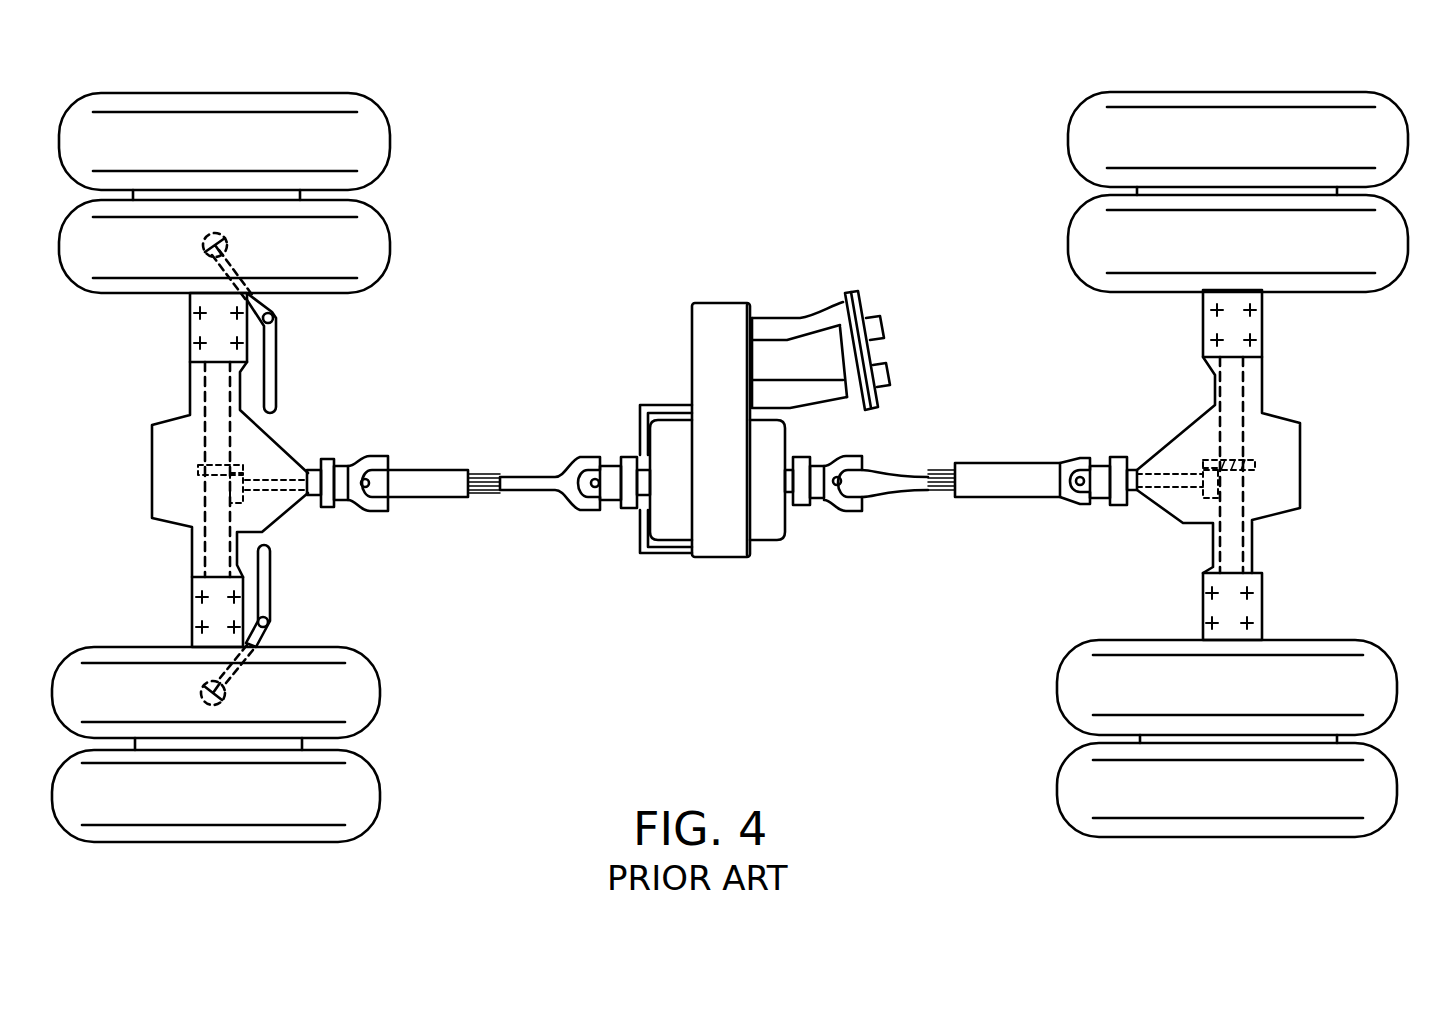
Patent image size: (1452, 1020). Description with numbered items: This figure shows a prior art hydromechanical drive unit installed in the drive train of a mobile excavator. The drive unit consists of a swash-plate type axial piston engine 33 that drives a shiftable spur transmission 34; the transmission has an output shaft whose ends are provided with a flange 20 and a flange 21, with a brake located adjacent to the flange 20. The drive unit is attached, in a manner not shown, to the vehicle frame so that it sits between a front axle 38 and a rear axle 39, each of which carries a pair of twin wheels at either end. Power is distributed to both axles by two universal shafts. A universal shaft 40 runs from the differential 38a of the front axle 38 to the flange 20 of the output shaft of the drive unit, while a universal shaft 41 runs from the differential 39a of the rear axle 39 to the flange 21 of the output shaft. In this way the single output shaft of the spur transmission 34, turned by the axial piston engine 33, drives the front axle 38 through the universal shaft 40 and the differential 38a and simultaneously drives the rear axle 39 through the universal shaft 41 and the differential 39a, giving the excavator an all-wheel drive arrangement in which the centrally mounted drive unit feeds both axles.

The flange 20 is at (640, 460).
The flange 21 is at (795, 447).
The swash-plate type axial piston engine 33 is at (813, 325).
The shiftable spur transmission 34 is at (718, 318).
The front axle 38 is at (203, 357).
The differential 38a is at (200, 470).
The rear axle 39 is at (1203, 330).
The differential 39a is at (1200, 455).
The universal shaft 40 is at (432, 478).
The universal shaft 41 is at (1023, 468).